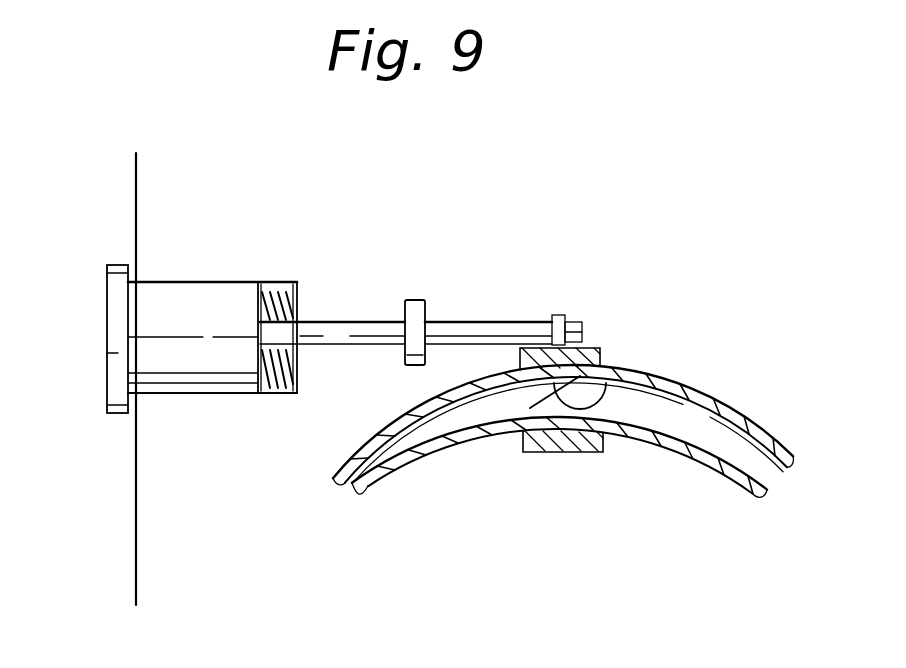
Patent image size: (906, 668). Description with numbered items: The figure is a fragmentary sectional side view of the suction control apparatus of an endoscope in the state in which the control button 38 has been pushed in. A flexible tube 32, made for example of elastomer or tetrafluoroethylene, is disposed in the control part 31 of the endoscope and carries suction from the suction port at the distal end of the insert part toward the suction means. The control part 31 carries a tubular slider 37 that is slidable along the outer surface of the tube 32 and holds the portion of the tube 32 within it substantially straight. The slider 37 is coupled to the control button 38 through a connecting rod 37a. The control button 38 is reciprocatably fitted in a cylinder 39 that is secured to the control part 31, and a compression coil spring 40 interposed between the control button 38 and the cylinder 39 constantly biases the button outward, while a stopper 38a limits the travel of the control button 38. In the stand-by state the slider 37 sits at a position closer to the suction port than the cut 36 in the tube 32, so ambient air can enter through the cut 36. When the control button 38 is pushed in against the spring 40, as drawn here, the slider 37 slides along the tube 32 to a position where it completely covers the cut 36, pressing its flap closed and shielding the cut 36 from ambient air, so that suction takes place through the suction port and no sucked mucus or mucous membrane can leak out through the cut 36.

The control part 31 is at (134, 204).
The control button 38 is at (108, 336).
The cylinder 39 is at (276, 396).
The compression coil spring 40 is at (268, 292).
The stopper 38a is at (414, 300).
The connecting rod 37a is at (499, 330).
The flexible tube 32 is at (707, 393).
The cut 36 is at (618, 369).
The slider 37 is at (562, 458).